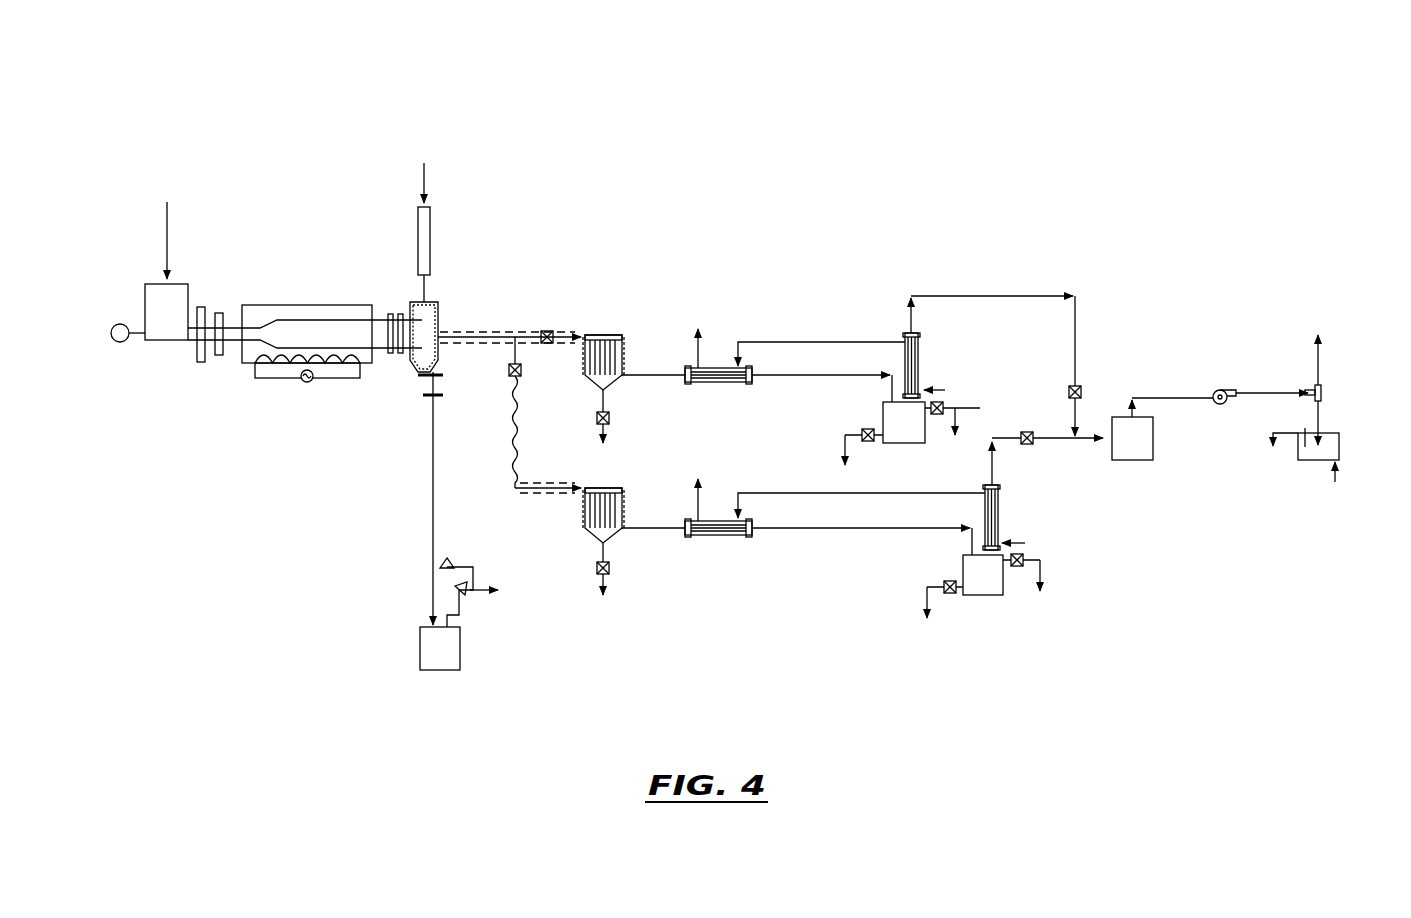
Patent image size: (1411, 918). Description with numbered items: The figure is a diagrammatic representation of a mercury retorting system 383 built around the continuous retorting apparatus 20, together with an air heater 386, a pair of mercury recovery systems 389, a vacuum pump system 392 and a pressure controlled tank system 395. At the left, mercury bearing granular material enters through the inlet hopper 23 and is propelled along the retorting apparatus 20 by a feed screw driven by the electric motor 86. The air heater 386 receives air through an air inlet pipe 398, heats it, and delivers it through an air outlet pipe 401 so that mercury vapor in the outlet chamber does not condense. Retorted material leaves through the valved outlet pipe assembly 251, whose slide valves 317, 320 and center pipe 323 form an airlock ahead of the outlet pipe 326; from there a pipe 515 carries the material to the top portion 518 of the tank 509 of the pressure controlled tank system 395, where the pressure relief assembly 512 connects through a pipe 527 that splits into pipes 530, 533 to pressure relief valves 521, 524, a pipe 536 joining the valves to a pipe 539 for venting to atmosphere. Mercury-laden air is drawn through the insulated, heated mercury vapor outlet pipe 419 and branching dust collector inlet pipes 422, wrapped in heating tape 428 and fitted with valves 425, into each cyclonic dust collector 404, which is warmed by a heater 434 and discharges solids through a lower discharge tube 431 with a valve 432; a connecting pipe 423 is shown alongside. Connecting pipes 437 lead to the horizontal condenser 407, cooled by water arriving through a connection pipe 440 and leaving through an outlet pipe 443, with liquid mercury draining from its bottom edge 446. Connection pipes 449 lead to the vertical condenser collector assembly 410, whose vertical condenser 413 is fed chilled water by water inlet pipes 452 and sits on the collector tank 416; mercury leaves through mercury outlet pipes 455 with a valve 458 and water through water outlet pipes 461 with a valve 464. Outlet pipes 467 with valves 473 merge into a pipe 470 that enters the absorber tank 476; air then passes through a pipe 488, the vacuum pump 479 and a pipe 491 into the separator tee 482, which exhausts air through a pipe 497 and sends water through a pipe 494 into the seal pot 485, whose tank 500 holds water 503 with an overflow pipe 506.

The mercury retorting system 383 is at (683, 130).
The mercury recovery systems 389 is at (798, 218).
The vacuum pump system 392 is at (1250, 294).
The inlet hopper 23 is at (203, 281).
The electric motor 86 is at (117, 340).
The retorting apparatus 20 is at (294, 284).
The air outlet pipe 401 is at (417, 300).
The air heater 386 is at (430, 243).
The air inlet pipe 398 is at (428, 177).
The slide valve 317 is at (430, 373).
The slide valve 320 is at (427, 400).
The center pipe 323 is at (440, 388).
The outlet pipe 326 is at (435, 440).
The valved outlet pipe assembly 251 is at (397, 409).
The pipe 515 is at (433, 512).
The conduit 423 is at (465, 334).
The mercury vapor outlet pipe 419 is at (512, 337).
The dust collector inlet pipes 422 is at (572, 342).
The electrical resistance heating tape 428 is at (564, 333).
The valves 425 is at (547, 348).
The cyclonic dust collector 404 is at (603, 286).
The heater 434 is at (615, 335).
The connecting pipes 437 is at (657, 377).
The valves 432 is at (612, 418).
The lower discharge tubes 431 is at (607, 432).
The bottom edge 446 is at (757, 384).
The outlet pipe 443 is at (700, 350).
The horizontal condenser 407 is at (714, 295).
The connection pipe 440 is at (857, 342).
The connection pipes 449 is at (862, 376).
The vertical condenser 413 is at (920, 340).
The vertical condenser collector assembly 410 is at (967, 351).
The collector tank 416 is at (893, 417).
The water inlet pipes 452 is at (927, 392).
The valve 464 is at (962, 408).
The water outlet pipes 461 is at (955, 430).
The valve 458 is at (862, 435).
The mercury outlet pipes 455 is at (847, 450).
The outlet pipe 467 is at (988, 296).
The valve 473 is at (1083, 392).
The pipe 470 is at (1095, 442).
The absorber tank 476 is at (1140, 440).
The pipe 488 is at (1153, 398).
The vacuum pump 479 is at (1220, 390).
The pipe 491 is at (1283, 373).
The separator tee 482 is at (1325, 391).
The pipe 497 is at (1322, 357).
The pipe 494 is at (1323, 431).
The tank 500 is at (1318, 462).
The water 503 is at (1305, 440).
The overflow pipe 506 is at (1283, 442).
The seal pot 485 is at (1335, 486).
The pressure relief assembly 512 is at (487, 562).
The pressure relief valve 524 is at (450, 558).
The pipe 539 is at (478, 593).
The pipe 536 is at (474, 585).
The pipe 530 is at (447, 590).
The pipe 527 is at (440, 625).
The pressure relief valve 521 is at (462, 598).
The pipe 533 is at (458, 618).
The top portion 518 is at (422, 630).
The tank 509 is at (427, 674).
The pressure controlled tank system 395 is at (396, 613).